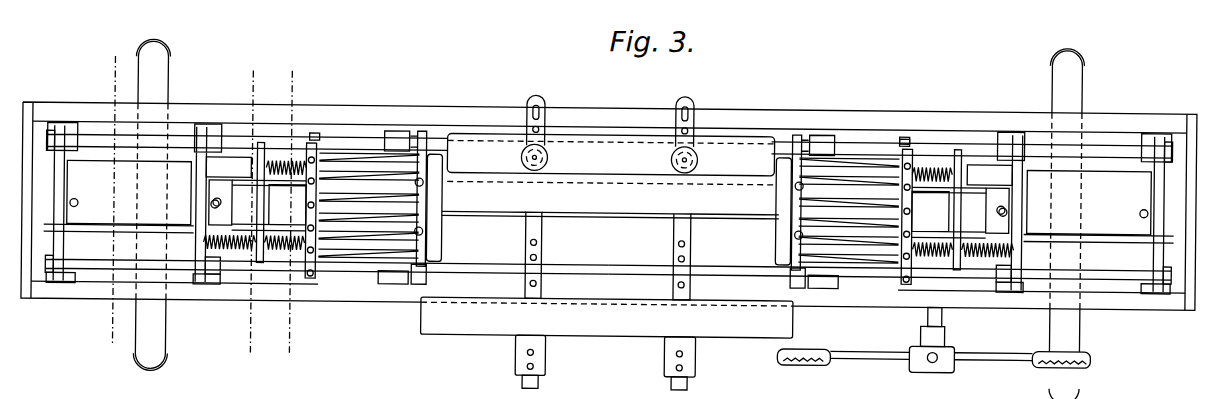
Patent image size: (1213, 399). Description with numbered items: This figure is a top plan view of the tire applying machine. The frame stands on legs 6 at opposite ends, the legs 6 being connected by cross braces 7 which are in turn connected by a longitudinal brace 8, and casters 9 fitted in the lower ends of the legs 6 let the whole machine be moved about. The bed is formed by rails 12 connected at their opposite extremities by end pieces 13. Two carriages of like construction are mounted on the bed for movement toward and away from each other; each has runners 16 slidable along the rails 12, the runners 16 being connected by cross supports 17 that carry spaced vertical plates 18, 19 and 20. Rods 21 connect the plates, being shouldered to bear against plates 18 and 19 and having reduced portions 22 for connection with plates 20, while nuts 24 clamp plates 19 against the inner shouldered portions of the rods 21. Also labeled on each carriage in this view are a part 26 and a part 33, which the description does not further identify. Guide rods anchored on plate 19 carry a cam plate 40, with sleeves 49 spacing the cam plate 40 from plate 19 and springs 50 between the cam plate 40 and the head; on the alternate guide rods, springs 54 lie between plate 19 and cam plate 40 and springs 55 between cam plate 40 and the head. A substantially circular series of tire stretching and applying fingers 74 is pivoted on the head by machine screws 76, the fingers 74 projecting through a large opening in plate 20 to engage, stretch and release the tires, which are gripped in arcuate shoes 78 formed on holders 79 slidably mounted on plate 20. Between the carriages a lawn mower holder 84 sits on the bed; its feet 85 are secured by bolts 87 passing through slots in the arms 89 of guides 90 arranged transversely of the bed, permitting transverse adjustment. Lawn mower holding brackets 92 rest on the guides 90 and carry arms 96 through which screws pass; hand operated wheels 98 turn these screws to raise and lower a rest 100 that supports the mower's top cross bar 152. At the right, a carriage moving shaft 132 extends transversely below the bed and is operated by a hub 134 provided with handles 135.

The legs 6 is at (169, 47).
The cross braces 7 is at (119, 346).
The longitudinal brace 8 is at (257, 342).
The casters 9 is at (296, 344).
The rails 12 is at (466, 103).
The end pieces 13 is at (42, 214).
The runners 16 is at (88, 124).
The cross supports 17 is at (70, 126).
The plate 18 is at (60, 283).
The plate 19 is at (205, 283).
The plate 20 is at (420, 281).
The rods 21 is at (108, 133).
The reduced portions 22 is at (338, 140).
The nuts 24 is at (228, 156).
The housing block 26 is at (142, 216).
The rod 33 is at (103, 223).
The cam plate 40 is at (264, 150).
The sleeves 49 is at (228, 162).
The springs 50 is at (300, 157).
The springs 54 is at (225, 250).
The springs 55 is at (300, 265).
The tire stretching and applying fingers 74 is at (365, 262).
The machine screws 76 is at (905, 127).
The tire gripping shoes 78 is at (445, 207).
The holders 79 is at (430, 230).
The lawn mower holder 84 is at (478, 302).
The feet 85 is at (517, 352).
The bolts 87 is at (537, 347).
The arms 89 is at (691, 376).
The guides 90 is at (545, 248).
The lawn mower holding brackets 92 is at (546, 108).
The arms 96 is at (548, 146).
The hand operated wheels 98 is at (528, 150).
The rest 100 is at (590, 138).
The carriage moving shaft 132 is at (928, 316).
The hub 134 is at (920, 362).
The handles 135 is at (815, 358).
The top cross bar 152 is at (605, 208).